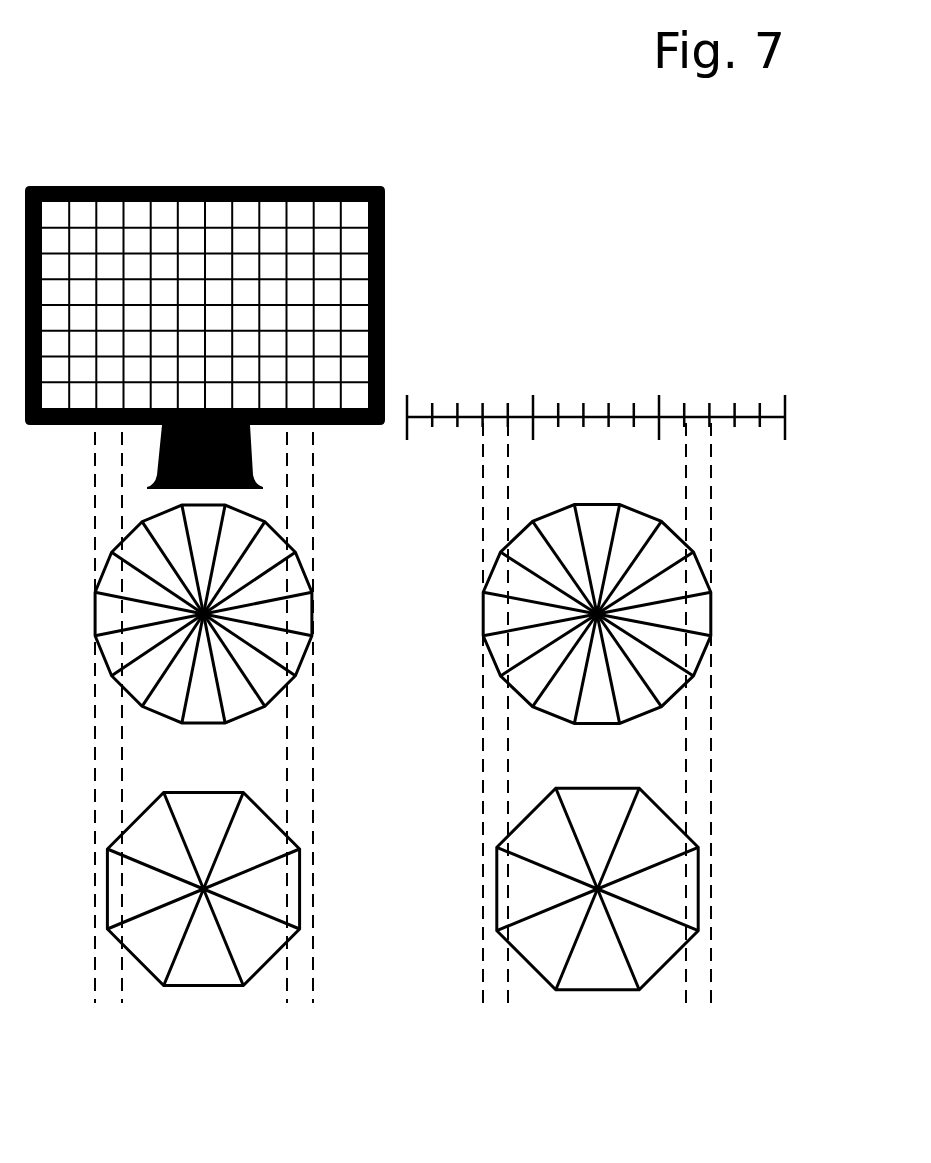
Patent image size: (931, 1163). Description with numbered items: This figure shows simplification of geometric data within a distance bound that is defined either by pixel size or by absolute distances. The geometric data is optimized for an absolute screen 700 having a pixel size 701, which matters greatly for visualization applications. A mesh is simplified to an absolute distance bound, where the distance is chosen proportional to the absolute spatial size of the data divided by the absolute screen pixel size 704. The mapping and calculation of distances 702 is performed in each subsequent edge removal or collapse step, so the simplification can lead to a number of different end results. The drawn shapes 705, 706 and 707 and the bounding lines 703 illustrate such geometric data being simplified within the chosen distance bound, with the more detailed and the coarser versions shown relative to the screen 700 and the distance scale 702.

The screen 700 is at (363, 177).
The pixel size 701 is at (355, 243).
The distances 702 is at (702, 402).
The second pair of aperture boundary lines 703 is at (697, 1002).
The absolute screen pixel size 704 is at (295, 1000).
The sixteen-sided aperture pattern 705 is at (663, 543).
The octagonal aperture pattern 706 is at (668, 898).
The aperture patterns 707 is at (270, 540).